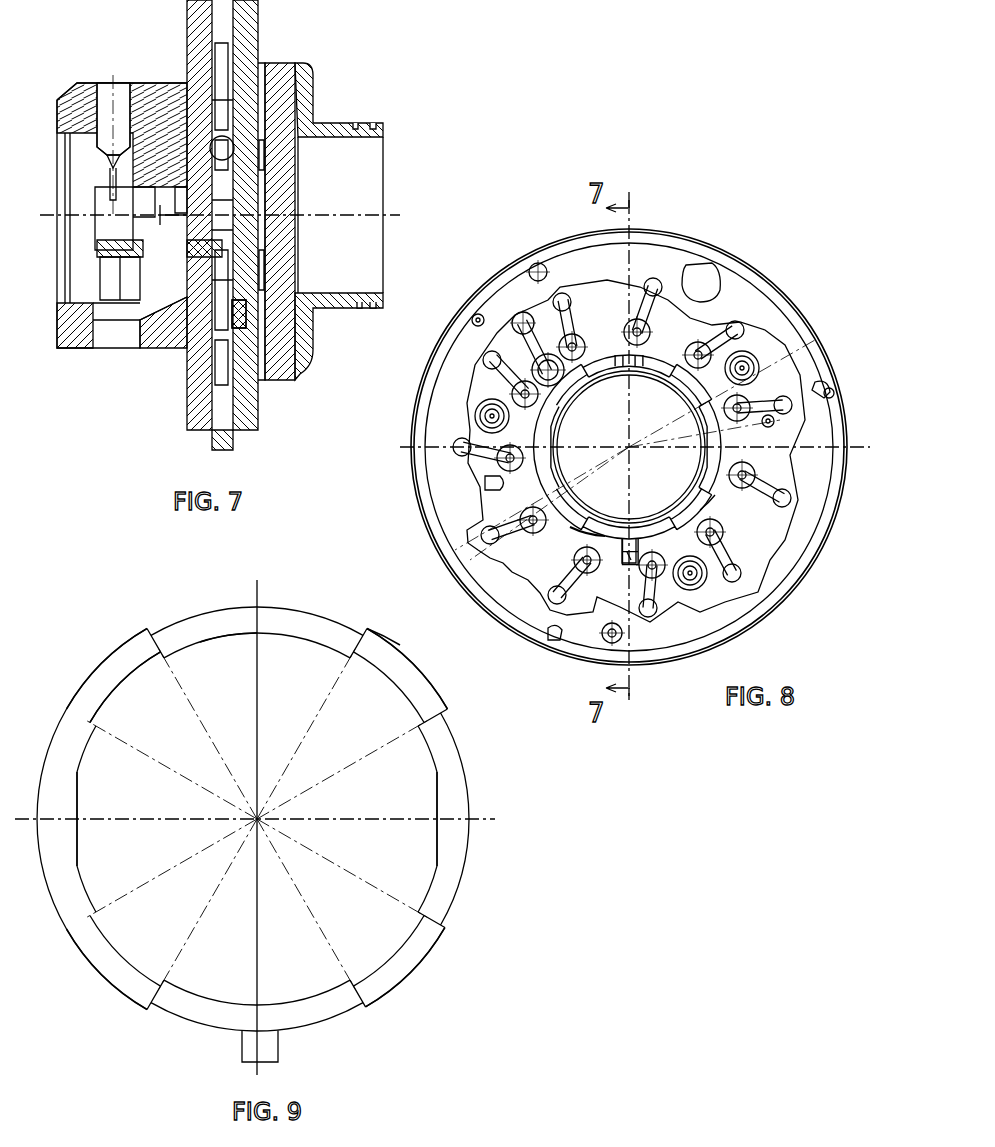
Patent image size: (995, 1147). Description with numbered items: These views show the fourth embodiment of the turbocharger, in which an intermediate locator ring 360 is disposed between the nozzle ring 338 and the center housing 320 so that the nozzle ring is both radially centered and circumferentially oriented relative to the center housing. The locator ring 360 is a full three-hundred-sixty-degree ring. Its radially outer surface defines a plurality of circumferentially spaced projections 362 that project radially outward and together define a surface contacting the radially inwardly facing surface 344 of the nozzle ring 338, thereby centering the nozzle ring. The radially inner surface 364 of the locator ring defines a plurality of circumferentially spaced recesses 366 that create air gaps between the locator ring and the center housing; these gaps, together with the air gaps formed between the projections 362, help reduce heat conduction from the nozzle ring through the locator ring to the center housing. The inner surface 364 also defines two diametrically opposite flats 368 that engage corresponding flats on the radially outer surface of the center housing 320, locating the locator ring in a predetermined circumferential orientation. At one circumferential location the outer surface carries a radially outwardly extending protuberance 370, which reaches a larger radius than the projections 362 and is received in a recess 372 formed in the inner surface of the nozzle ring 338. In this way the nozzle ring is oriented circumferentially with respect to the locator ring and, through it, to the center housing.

In FIG. 7, the center housing 320 is at (148, 87).
In FIG. 7, the nozzle ring 338 is at (255, 73).
In FIG. 8, the nozzle ring 338 is at (750, 530).
In FIG. 8, the radially inwardly facing surface 344 is at (606, 366).
In FIG. 7, the locator ring 360 is at (240, 308).
In FIG. 8, the locator ring 360 is at (658, 367).
In FIG. 9, the locator ring 360 is at (481, 869).
In FIG. 8, the projections 362 is at (563, 525).
In FIG. 9, the projections 362 is at (408, 655).
In FIG. 9, the radially inner surface 364 is at (185, 652).
In FIG. 8, the recesses 366 is at (690, 508).
In FIG. 9, the recesses 366 is at (106, 697).
In FIG. 9, the flats 368 is at (80, 795).
In FIG. 8, the protuberance 370 is at (627, 552).
In FIG. 9, the protuberance 370 is at (278, 1047).
In FIG. 8, the recess 372 is at (630, 572).